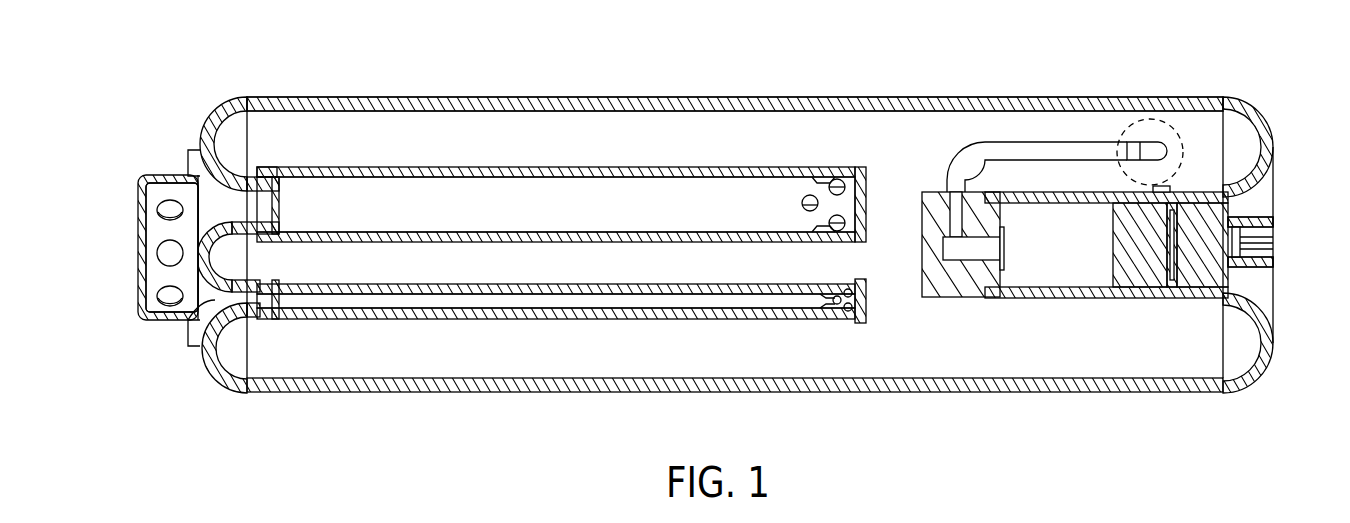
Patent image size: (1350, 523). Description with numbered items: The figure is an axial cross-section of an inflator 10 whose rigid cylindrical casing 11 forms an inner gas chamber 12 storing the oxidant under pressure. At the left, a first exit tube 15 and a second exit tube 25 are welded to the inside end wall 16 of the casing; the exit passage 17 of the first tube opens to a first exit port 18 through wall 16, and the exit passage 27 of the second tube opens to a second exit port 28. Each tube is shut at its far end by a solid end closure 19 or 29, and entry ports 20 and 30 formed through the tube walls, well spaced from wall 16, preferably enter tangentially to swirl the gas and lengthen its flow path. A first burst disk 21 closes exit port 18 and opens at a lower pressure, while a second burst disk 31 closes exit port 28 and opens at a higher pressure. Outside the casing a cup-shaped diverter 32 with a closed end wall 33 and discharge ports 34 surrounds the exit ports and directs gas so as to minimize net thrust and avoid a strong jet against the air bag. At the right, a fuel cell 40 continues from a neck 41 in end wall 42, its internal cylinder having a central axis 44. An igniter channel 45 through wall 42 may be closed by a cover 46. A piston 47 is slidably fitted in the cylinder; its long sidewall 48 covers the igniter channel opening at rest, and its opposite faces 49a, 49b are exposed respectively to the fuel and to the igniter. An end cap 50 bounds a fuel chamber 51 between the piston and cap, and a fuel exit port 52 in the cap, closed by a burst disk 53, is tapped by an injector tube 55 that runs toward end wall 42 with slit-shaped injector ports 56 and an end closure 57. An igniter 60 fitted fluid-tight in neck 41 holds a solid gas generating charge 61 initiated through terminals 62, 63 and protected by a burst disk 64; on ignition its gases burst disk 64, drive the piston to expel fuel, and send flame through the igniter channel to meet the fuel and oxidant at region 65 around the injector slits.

The inflator 10 is at (258, 402).
The casing 11 is at (690, 394).
The inner gas chamber 12 is at (570, 154).
The first exit tube 15 is at (478, 320).
The inside end wall 16 is at (205, 372).
The exit passage 17 is at (405, 303).
The first exit port 18 is at (195, 302).
The solid end closure 19 is at (868, 300).
The entry ports 20 is at (833, 302).
The first burst disk 21 is at (281, 302).
The second exit tube 25 is at (462, 165).
The exit passage 27 is at (367, 205).
The second exit port 28 is at (290, 167).
The solid end closure 29 is at (870, 206).
The entry ports 30 is at (815, 166).
The second burst disk 31 is at (283, 206).
The diverter 32 is at (146, 174).
The closed end wall 33 is at (140, 290).
The discharge ports 34 is at (166, 250).
The fuel cell 40 is at (1108, 300).
The neck 41 is at (1212, 298).
The end wall 42 is at (1269, 341).
The central axis 44 is at (1060, 250).
The igniter channel 45 is at (1273, 158).
The cover 46 is at (1241, 140).
The piston 47 is at (1112, 245).
The sidewall 48 is at (1103, 191).
The piston face 49a is at (1108, 285).
The piston face 49b is at (1232, 200).
The end cap 50 is at (942, 300).
The fuel chamber 51 is at (1040, 272).
The fuel exit port 52 is at (980, 272).
The burst disk 53 is at (1007, 250).
The injector tube 55 is at (998, 138).
The injector ports 56 is at (1135, 142).
The closure 57 is at (1171, 176).
The igniter 60 is at (1263, 282).
The gas generating charge 61 is at (1192, 290).
The terminal 62 is at (1273, 230).
The terminal 63 is at (1273, 260).
The burst disk 64 is at (1265, 246).
The region 65 is at (1158, 135).